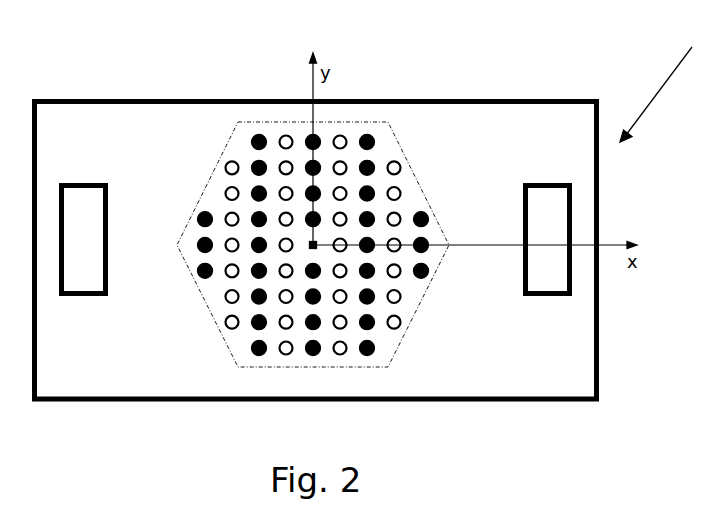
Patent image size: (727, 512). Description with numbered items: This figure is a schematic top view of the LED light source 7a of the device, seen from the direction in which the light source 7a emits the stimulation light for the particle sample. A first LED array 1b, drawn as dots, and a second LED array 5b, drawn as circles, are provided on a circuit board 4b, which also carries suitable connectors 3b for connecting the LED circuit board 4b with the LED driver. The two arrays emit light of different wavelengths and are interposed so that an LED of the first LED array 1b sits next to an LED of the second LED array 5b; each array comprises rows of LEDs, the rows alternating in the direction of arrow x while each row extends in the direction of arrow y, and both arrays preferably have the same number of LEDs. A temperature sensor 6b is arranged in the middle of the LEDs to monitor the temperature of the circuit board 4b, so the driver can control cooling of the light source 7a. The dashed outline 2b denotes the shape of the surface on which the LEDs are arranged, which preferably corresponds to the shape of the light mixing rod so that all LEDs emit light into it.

The first LED array 1b is at (377, 138).
The shape of the surface on which the LEDs are arranged 2b is at (422, 312).
The connectors 3b is at (112, 201).
The circuit board 4b is at (82, 93).
The second LED array 5b is at (225, 331).
The temperature sensor 6b is at (313, 245).
The LED light source 7a is at (656, 94).